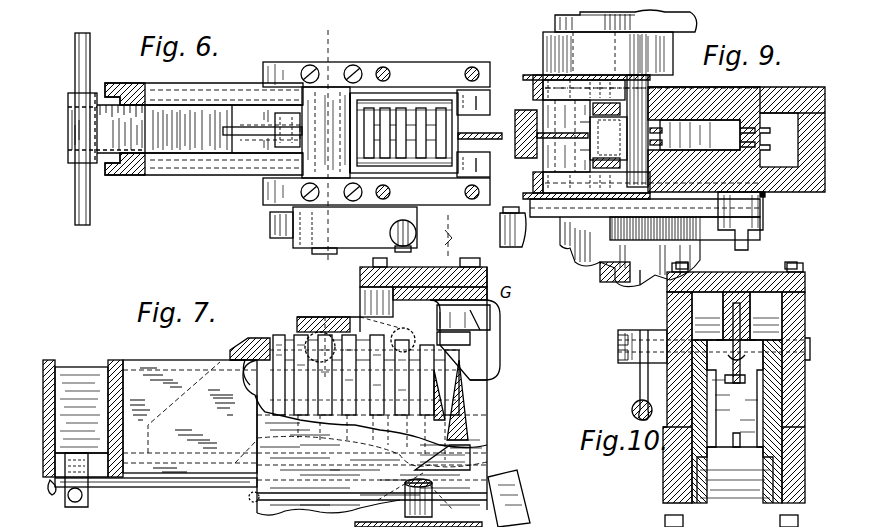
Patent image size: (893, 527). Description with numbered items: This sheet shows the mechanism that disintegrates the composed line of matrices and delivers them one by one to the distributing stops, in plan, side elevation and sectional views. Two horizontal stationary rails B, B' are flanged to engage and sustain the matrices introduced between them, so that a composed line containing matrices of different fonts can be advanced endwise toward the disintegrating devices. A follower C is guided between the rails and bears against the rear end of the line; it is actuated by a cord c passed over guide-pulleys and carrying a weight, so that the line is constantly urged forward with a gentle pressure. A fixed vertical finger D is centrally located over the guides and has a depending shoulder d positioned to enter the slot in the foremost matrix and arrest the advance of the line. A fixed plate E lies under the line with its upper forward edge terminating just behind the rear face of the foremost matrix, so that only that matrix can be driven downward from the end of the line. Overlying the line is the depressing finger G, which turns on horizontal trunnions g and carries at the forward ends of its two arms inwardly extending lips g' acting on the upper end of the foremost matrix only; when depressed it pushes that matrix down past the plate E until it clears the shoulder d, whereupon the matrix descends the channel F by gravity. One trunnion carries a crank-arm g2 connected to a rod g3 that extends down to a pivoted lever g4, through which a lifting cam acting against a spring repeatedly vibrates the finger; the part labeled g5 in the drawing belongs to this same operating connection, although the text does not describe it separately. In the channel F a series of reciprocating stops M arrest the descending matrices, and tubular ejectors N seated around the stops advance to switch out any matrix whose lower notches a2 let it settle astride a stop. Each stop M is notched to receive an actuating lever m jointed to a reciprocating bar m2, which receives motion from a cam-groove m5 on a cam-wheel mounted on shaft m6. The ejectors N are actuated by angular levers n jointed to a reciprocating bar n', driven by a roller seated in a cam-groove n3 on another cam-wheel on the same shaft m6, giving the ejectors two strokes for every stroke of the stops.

In FIG. 6, the horizontal stationary rail B' is at (204, 82).
In FIG. 7, the horizontal stationary rail B' is at (76, 400).
In FIG. 10, the horizontal stationary rail B' is at (745, 397).
In FIG. 6, the horizontal stationary rail B is at (204, 178).
In FIG. 7, the horizontal stationary rail B is at (182, 442).
In FIG. 10, the horizontal stationary rail B is at (668, 397).
In FIG. 6, the follower C is at (262, 148).
In FIG. 7, the follower C is at (237, 343).
In FIG. 7, the cord c is at (150, 488).
In FIG. 6, the depressing finger G is at (402, 70).
In FIG. 7, the depressing finger G is at (480, 305).
In FIG. 6, the main body / cylinder assembly A is at (445, 100).
In FIG. 9, the main body / cylinder assembly A is at (760, 95).
In FIG. 7, the main body / cylinder assembly A is at (510, 414).
In FIG. 10, the main body / cylinder assembly A is at (735, 413).
In FIG. 10, the notch a2 is at (736, 447).
In FIG. 9, the trunnion g is at (619, 110).
In FIG. 7, the trunnion g is at (328, 306).
In FIG. 6, the lip g' is at (495, 134).
In FIG. 9, the lip g' is at (534, 135).
In FIG. 10, the lip g' is at (737, 316).
In FIG. 6, the crank-arm g2 is at (352, 235).
In FIG. 7, the crank-arm g2 is at (368, 310).
In FIG. 10, the crank-arm g2 is at (628, 350).
In FIG. 6, the rod g3 is at (416, 227).
In FIG. 9, the rod g3 is at (522, 240).
In FIG. 7, the rod g3 is at (405, 505).
In FIG. 10, the rod g3 is at (637, 395).
In FIG. 9, the lever g4 is at (660, 250).
In FIG. 9, the rod g5 is at (585, 285).
In FIG. 9, the actuating lever m is at (700, 110).
In FIG. 9, the reciprocating actuating bar m2 is at (590, 108).
In FIG. 9, the cam-groove m5 is at (540, 78).
In FIG. 9, the shaft m6 is at (625, 282).
In FIG. 9, the angular lever n is at (678, 242).
In FIG. 9, the reciprocating bar n' is at (588, 144).
In FIG. 9, the cam-groove n3 is at (537, 182).
In FIG. 9, the guide or channel F is at (793, 90).
In FIG. 9, the stop M is at (764, 196).
In FIG. 9, the ejector N is at (718, 235).
In FIG. 7, the fixed vertical finger D is at (502, 340).
In FIG. 10, the fixed vertical finger D is at (760, 330).
In FIG. 7, the depending shoulder d is at (465, 380).
In FIG. 7, the fixed plate E is at (470, 458).